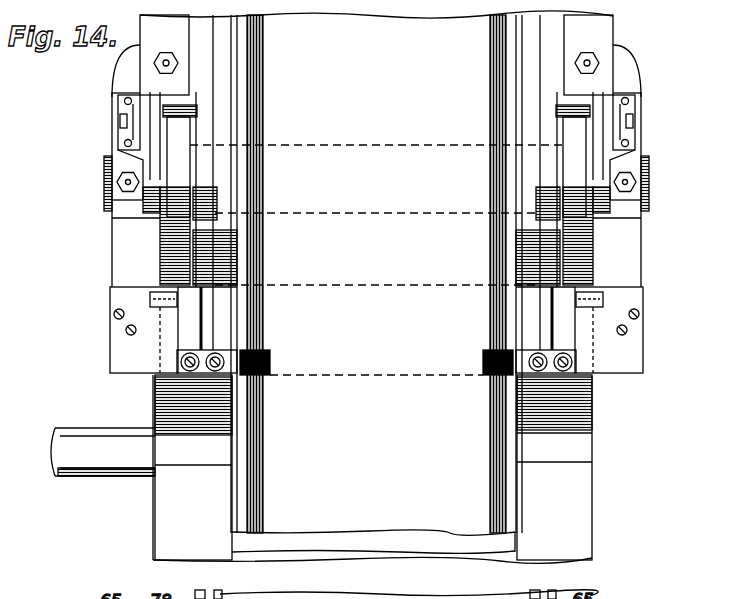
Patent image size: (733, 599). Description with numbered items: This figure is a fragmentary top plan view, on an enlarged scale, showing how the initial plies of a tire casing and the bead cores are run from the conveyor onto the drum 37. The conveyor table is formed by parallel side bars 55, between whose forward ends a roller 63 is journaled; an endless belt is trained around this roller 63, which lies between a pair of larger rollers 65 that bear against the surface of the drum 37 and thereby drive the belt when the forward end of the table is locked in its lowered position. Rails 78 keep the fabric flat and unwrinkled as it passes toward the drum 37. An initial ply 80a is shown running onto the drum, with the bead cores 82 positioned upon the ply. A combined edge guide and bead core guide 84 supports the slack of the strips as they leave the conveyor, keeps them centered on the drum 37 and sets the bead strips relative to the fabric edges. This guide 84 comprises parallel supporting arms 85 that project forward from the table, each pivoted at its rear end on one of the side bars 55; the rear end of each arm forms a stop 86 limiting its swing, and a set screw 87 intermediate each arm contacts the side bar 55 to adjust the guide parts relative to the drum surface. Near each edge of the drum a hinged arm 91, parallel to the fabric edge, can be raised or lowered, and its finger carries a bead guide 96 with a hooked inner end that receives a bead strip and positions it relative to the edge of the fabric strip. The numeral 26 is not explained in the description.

The side bars 55 is at (396, 53).
The stop 86 is at (117, 123).
The set screw 87 is at (125, 181).
The rollers 65 is at (150, 212).
The supporting arms 85 is at (150, 232).
The edge guide and bead core guide 84 is at (103, 353).
The arm 91 is at (374, 332).
The bead guide 96 is at (376, 360).
The bead cores 82 is at (376, 274).
The rails 78 is at (228, 183).
The roller 63 is at (372, 145).
The shaft 26 is at (100, 478).
The drum 37 is at (574, 467).
The initial ply 80a is at (372, 545).